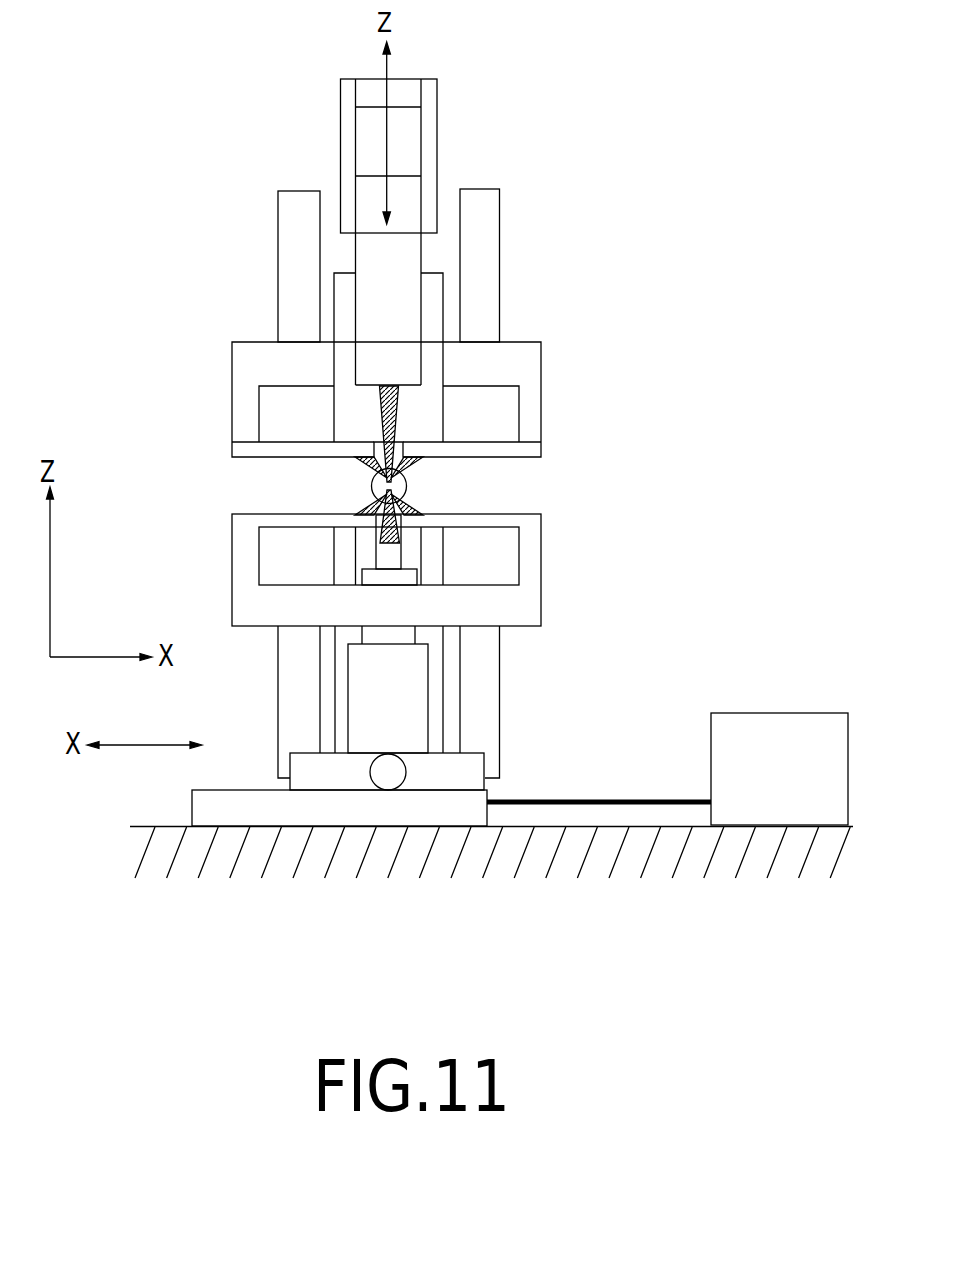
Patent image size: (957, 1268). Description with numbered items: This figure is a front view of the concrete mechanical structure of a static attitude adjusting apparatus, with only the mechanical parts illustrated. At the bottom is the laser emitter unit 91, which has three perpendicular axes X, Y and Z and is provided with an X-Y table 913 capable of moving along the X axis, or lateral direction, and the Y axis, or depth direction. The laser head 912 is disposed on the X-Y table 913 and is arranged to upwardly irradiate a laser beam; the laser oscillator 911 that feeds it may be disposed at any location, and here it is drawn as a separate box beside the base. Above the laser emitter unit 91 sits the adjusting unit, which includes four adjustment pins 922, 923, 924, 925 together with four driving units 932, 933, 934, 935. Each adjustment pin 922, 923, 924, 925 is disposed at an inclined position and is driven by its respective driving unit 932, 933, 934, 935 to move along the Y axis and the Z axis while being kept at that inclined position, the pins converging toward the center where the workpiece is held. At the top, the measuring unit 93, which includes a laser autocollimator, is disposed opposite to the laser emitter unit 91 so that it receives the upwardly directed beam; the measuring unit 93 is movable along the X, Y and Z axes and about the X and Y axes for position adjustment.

The laser emitter unit 91 is at (333, 665).
The laser oscillator 911 is at (773, 712).
The laser head 912 is at (386, 560).
The X-Y table 913 is at (447, 763).
The measuring unit 93 is at (400, 281).
The adjustment pin 922 is at (420, 473).
The adjustment pin 923 is at (420, 506).
The adjustment pin 924 is at (353, 474).
The adjustment pin 925 is at (353, 505).
The driving unit 932 is at (513, 448).
The driving unit 933 is at (503, 518).
The driving unit 934 is at (260, 449).
The driving unit 935 is at (270, 516).